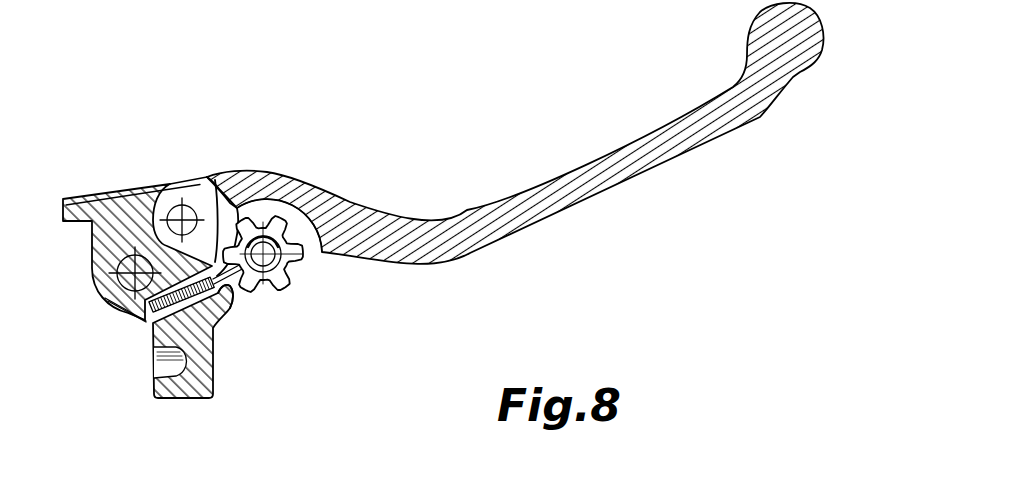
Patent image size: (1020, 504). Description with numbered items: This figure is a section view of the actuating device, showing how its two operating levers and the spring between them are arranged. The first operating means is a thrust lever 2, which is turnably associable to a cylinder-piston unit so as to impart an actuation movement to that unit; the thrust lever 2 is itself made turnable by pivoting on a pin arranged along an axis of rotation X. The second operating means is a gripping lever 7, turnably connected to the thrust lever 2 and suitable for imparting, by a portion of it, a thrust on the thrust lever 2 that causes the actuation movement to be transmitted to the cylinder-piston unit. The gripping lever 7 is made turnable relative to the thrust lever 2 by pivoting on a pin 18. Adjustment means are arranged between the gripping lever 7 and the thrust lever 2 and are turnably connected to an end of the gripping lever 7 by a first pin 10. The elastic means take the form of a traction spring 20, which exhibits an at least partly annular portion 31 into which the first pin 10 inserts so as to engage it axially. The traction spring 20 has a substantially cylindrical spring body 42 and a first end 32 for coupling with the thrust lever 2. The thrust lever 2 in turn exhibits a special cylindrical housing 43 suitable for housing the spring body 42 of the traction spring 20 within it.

The thrust lever 2 is at (156, 177).
The gripping lever 7 is at (598, 155).
The first pin 10 is at (277, 217).
The pin 18 is at (183, 204).
The traction spring 20 is at (243, 205).
The at least partly annular portion 31 is at (305, 193).
The first end 32 is at (145, 320).
The spring body 42 is at (211, 353).
The cylindrical housing 43 is at (226, 305).